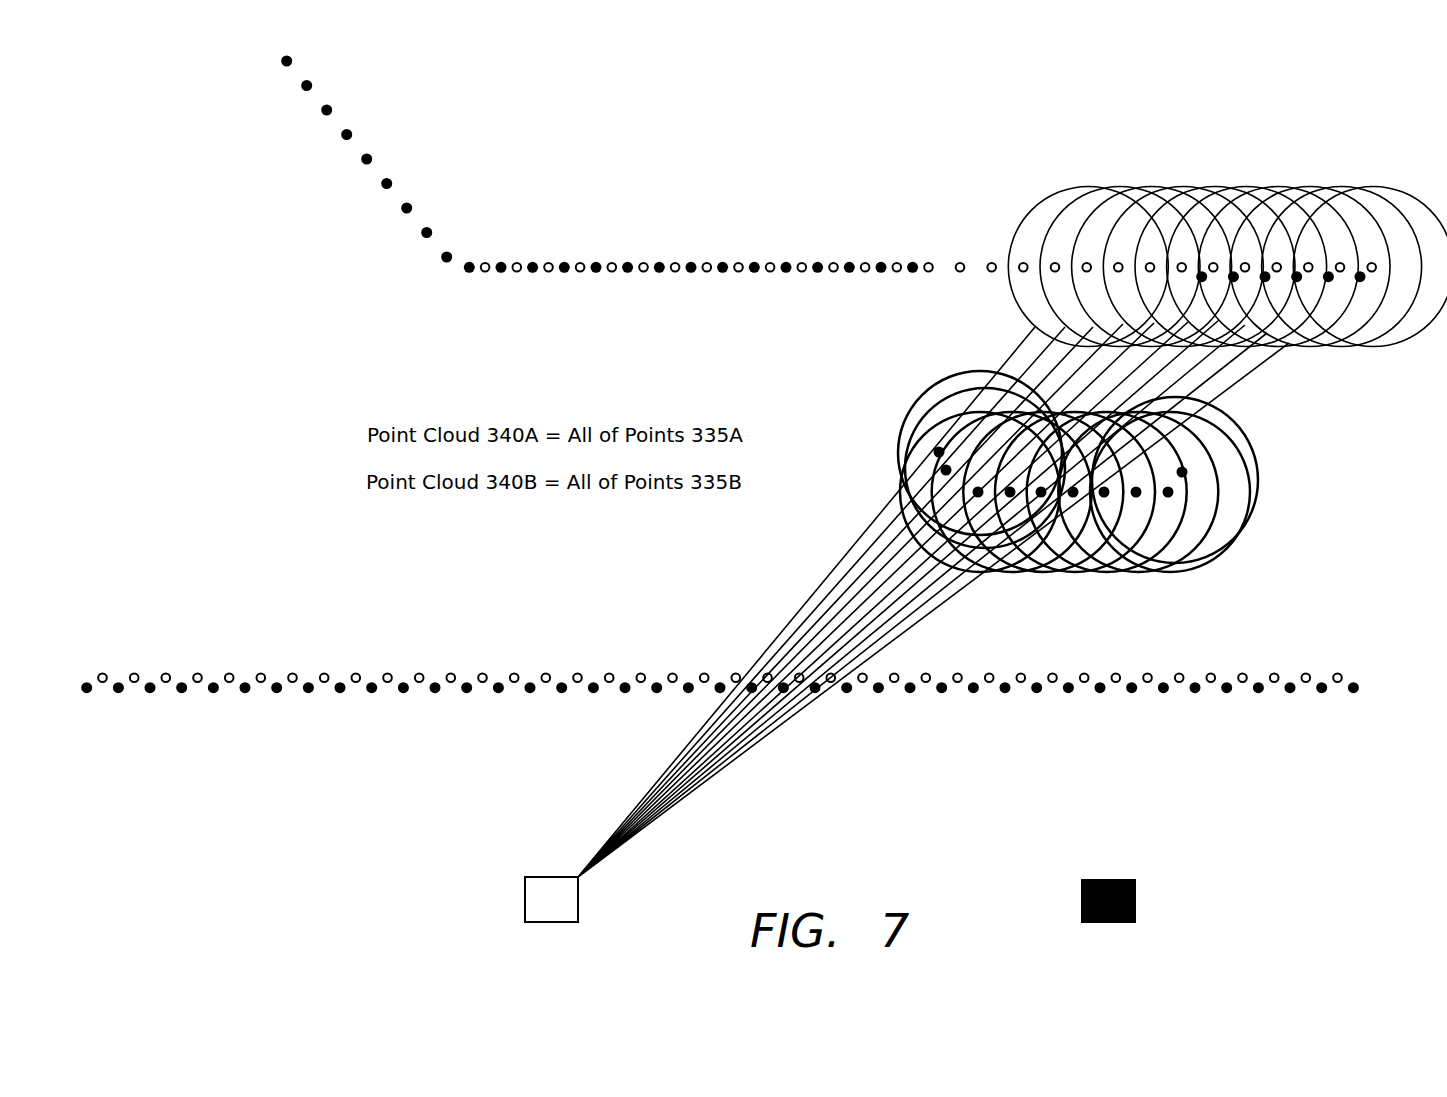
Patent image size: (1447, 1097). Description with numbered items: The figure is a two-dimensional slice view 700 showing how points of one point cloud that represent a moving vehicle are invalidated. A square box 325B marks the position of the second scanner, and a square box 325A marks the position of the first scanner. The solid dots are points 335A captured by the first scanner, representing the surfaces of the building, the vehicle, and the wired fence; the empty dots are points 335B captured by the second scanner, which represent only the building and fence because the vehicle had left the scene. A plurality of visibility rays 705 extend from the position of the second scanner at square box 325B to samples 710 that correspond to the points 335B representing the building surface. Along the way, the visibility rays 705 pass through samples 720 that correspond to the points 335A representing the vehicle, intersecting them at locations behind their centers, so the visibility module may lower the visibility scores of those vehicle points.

The 2D slice view 700 is at (927, 157).
The points of point cloud 340B 335B is at (1372, 262).
The samples 710 is at (1320, 348).
The samples 720 is at (1262, 483).
The points of point cloud 340A 335A is at (1352, 682).
The visibility rays 705 is at (800, 713).
The square box 325B is at (583, 897).
The square box 325A is at (1140, 899).